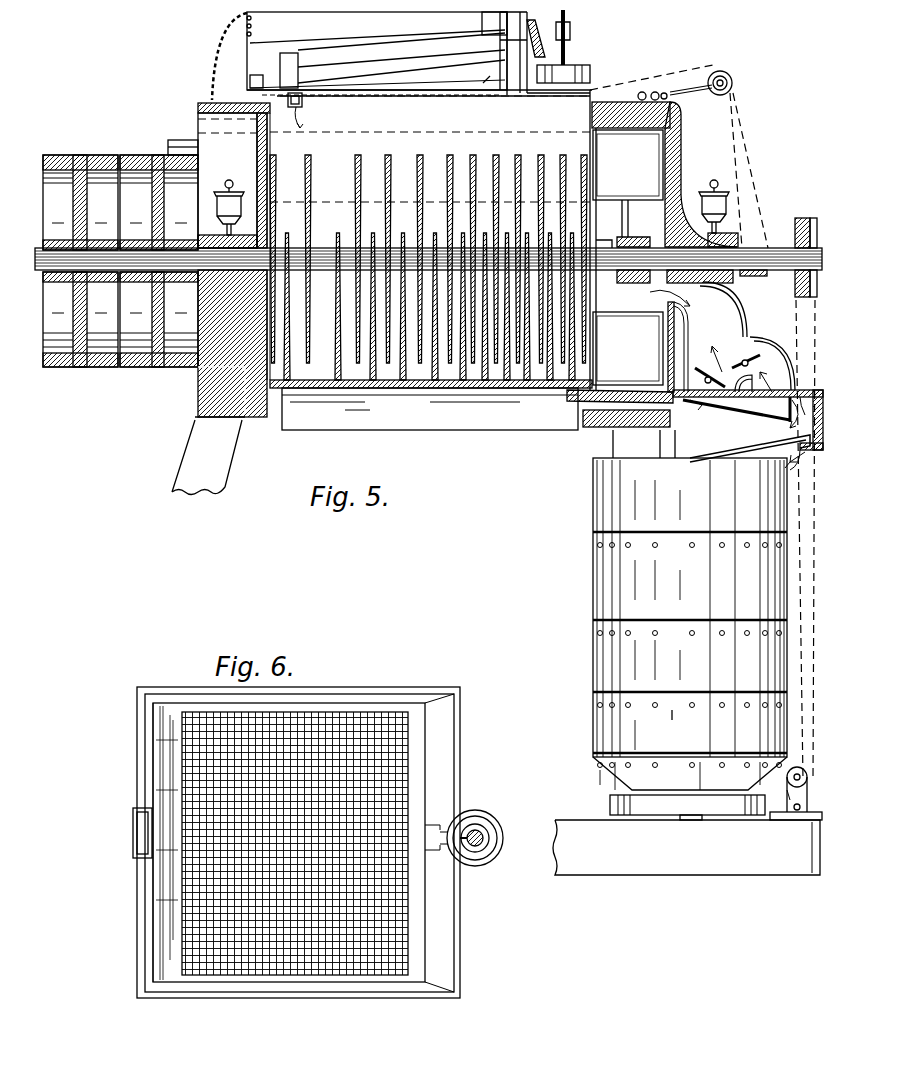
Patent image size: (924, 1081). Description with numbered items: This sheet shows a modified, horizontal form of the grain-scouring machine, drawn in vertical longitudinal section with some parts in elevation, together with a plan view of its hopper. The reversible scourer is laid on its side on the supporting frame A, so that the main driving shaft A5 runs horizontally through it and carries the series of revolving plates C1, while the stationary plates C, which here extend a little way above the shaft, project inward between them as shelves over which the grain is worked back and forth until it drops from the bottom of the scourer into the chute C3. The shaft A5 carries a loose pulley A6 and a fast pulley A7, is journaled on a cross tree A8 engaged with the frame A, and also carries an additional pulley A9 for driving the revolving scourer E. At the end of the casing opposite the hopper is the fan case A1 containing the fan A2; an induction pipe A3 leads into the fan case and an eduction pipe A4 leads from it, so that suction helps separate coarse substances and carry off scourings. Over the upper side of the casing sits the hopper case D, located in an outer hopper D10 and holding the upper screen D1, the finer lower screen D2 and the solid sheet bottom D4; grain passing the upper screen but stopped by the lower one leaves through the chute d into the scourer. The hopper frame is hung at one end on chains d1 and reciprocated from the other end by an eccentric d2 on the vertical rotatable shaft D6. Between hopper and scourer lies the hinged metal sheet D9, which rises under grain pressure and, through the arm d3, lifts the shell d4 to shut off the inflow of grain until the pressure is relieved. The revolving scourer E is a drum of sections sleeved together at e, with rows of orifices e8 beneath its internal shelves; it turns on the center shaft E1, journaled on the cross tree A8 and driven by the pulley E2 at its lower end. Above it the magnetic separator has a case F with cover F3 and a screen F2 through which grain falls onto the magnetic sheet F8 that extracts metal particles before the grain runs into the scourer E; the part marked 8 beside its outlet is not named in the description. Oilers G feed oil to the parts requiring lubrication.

In FIG. 5, the supporting frame A is at (421, 292).
In FIG. 5, the fan case A1 is at (681, 168).
In FIG. 5, the fan A2 is at (628, 206).
In FIG. 5, the induction pipe A3 is at (722, 340).
In FIG. 5, the eduction pipe A4 is at (168, 150).
In FIG. 5, the main driving shaft A5 is at (603, 246).
In FIG. 5, the loose pulley A6 is at (159, 261).
In FIG. 5, the fast pulley A7 is at (80, 261).
In FIG. 5, the cross tree A8 is at (686, 847).
In FIG. 5, the additional pulley A9 is at (770, 212).
In FIG. 5, the stationary plates C is at (340, 354).
In FIG. 5, the revolving plates C1 is at (309, 238).
In FIG. 5, the chute C3 is at (472, 419).
In FIG. 5, the hopper case D is at (378, 56).
In FIG. 5, the upper screen D1 is at (313, 50).
In FIG. 6, the upper screen D1 is at (295, 853).
In FIG. 5, the lower screen D2 is at (340, 65).
In FIG. 5, the solid sheet bottom D4 is at (410, 68).
In FIG. 5, the vertical rotatable shaft D6 is at (573, 37).
In FIG. 6, the vertical rotatable shaft D6 is at (490, 838).
In FIG. 5, the metal sheet D9 is at (381, 99).
In FIG. 5, the outer hopper D10 is at (377, 27).
In FIG. 6, the outer hopper D10 is at (388, 688).
In FIG. 5, the chute d is at (303, 99).
In FIG. 5, the chains d1 is at (262, 49).
In FIG. 5, the eccentric d2 is at (563, 60).
In FIG. 6, the eccentric d2 is at (470, 822).
In FIG. 5, the arm d3 is at (491, 74).
In FIG. 6, the arm d3 is at (140, 836).
In FIG. 5, the shell d4 is at (494, 23).
In FIG. 5, the revolving scourer E is at (808, 462).
In FIG. 5, the center shaft E1 is at (694, 820).
In FIG. 5, the driving pulley E2 is at (687, 805).
In FIG. 5, the sleeved joints e is at (681, 645).
In FIG. 5, the orifices e8 is at (670, 706).
In FIG. 5, the case F is at (824, 428).
In FIG. 5, the screen F2 is at (740, 412).
In FIG. 5, the cover F3 is at (813, 397).
In FIG. 5, the magnetic sheet F8 is at (750, 448).
In FIG. 5, the outlet 8 is at (806, 452).
In FIG. 5, the oilers G is at (475, 204).